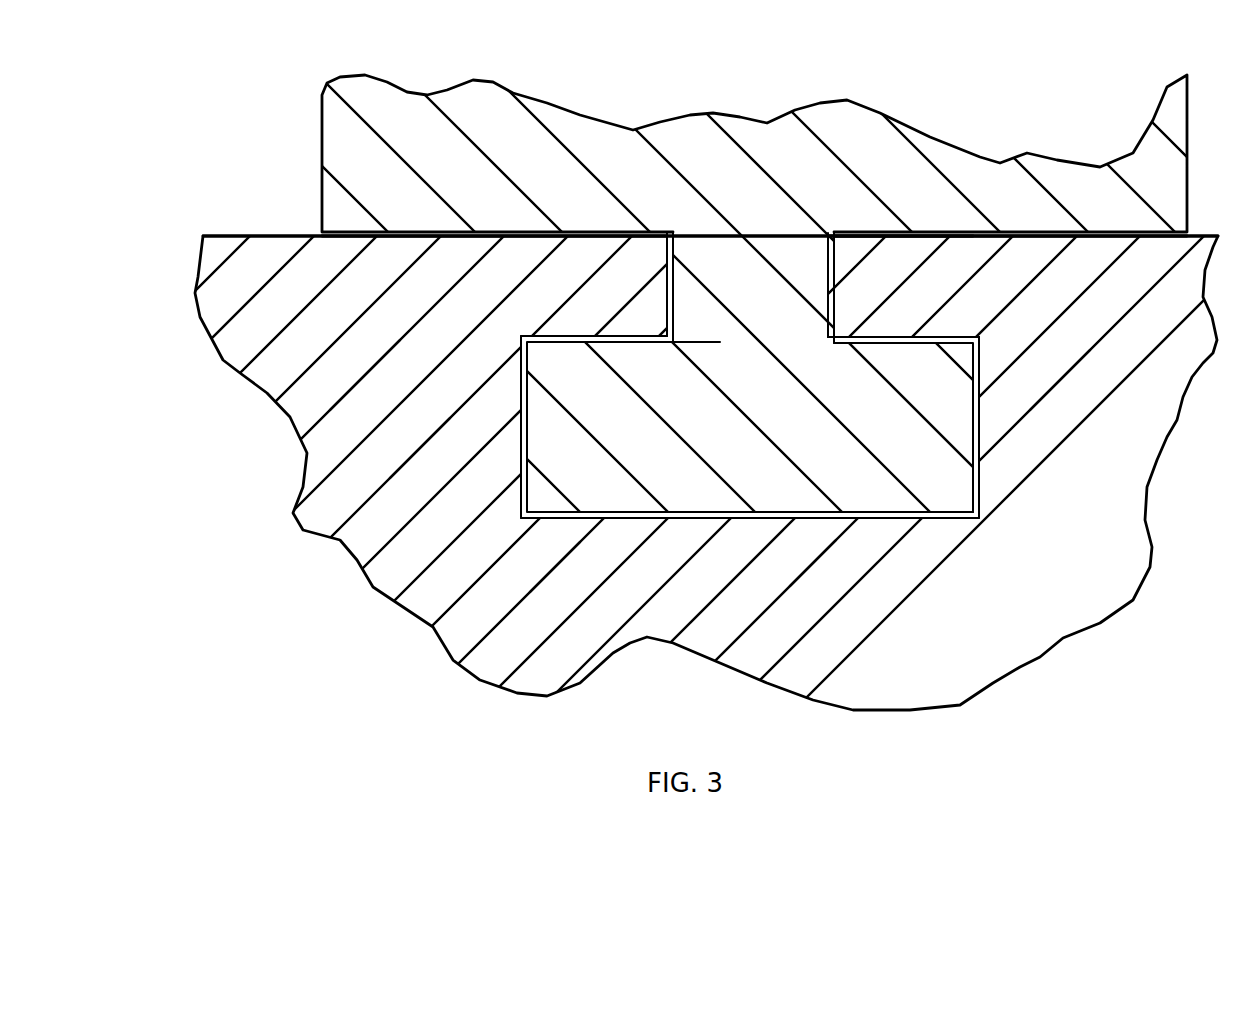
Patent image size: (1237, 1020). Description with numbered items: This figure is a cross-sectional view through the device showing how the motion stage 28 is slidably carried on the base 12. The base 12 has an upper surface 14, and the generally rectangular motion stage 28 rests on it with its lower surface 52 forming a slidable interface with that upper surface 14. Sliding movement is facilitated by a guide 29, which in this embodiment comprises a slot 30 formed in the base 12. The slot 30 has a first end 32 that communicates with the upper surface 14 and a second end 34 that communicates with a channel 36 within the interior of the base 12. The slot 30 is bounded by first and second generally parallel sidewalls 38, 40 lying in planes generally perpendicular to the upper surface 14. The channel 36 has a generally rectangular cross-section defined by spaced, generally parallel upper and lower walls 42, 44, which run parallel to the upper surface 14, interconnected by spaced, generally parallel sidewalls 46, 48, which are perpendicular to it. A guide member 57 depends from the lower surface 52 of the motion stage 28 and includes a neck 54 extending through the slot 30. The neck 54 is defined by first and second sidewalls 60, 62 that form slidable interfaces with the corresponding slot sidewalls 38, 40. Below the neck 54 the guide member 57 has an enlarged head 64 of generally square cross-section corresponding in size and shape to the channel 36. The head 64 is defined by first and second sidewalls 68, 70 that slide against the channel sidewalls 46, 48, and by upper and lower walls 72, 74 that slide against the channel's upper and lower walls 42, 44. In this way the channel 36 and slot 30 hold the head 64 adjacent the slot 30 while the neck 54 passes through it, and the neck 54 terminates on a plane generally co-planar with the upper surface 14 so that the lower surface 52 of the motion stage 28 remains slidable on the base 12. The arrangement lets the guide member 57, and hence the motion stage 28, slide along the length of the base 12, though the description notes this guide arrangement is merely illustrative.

The base 12 is at (262, 405).
The upper surface 14 is at (237, 236).
The motion stage 28 is at (980, 156).
The guide 29 is at (996, 366).
The slot 30 is at (835, 294).
The first end 32 is at (853, 235).
The second end 34 is at (684, 343).
The channel 36 is at (1052, 404).
The first sidewall 38 is at (668, 243).
The second sidewall 40 is at (825, 329).
The upper wall 42 is at (555, 335).
The lower wall 44 is at (569, 567).
The sidewall 46 is at (421, 379).
The sidewall 48 is at (973, 497).
The lower surface 52 is at (410, 237).
The neck 54 is at (695, 223).
The guide member 57 is at (702, 521).
The first sidewall 60 is at (674, 298).
The second sidewall 62 is at (827, 260).
The enlarged head 64 is at (742, 522).
The first sidewall 68 is at (440, 464).
The second sidewall 70 is at (981, 427).
The upper wall 72 is at (930, 338).
The lower wall 74 is at (836, 561).